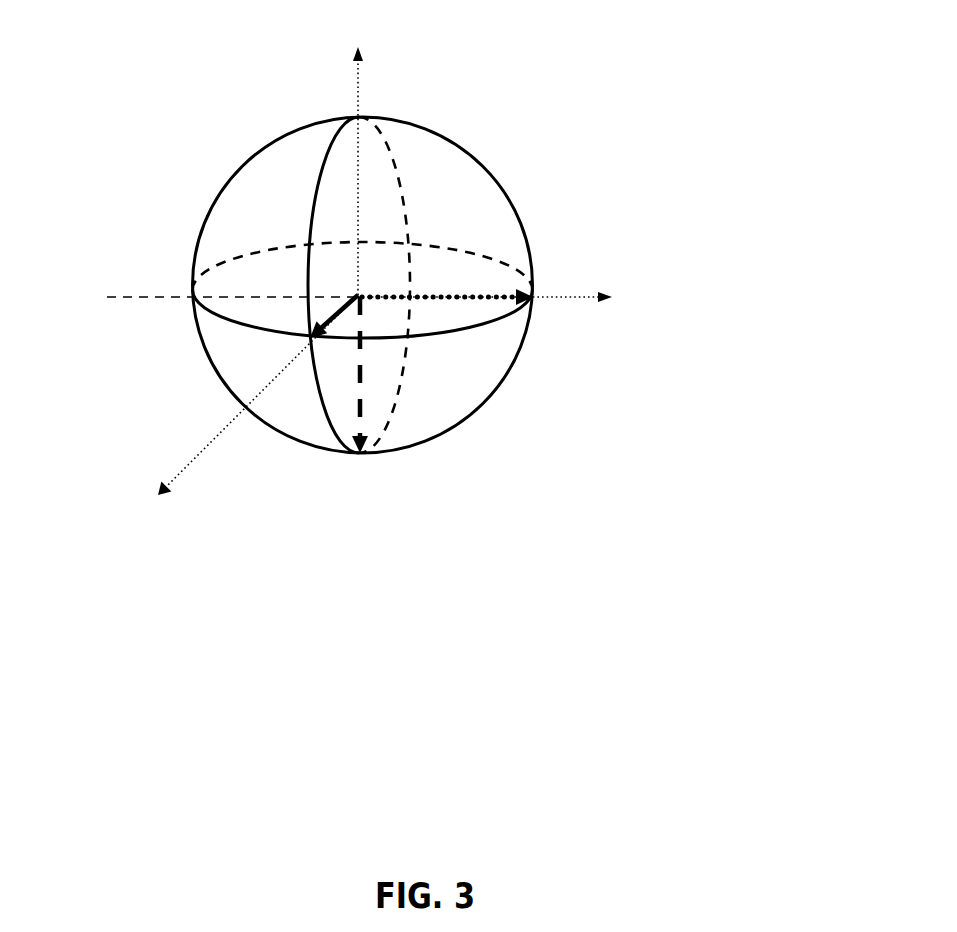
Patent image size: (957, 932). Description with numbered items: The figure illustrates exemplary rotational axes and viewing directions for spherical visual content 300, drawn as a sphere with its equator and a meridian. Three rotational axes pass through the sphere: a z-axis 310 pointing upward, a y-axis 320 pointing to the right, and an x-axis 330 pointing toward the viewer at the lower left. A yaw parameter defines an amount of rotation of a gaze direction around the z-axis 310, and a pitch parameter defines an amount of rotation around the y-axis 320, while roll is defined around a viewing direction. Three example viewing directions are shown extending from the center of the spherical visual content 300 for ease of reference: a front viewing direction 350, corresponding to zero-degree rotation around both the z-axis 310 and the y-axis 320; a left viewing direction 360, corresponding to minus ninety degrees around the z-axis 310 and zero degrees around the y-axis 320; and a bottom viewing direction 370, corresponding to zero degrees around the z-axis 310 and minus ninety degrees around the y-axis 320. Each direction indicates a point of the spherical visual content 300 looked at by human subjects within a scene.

The spherical visual content 300 is at (568, 77).
The z-axis 310 is at (358, 154).
The y-axis 320 is at (406, 323).
The x-axis 330 is at (231, 419).
The front viewing direction 350 is at (330, 318).
The left viewing direction 360 is at (457, 295).
The bottom viewing direction 370 is at (362, 388).